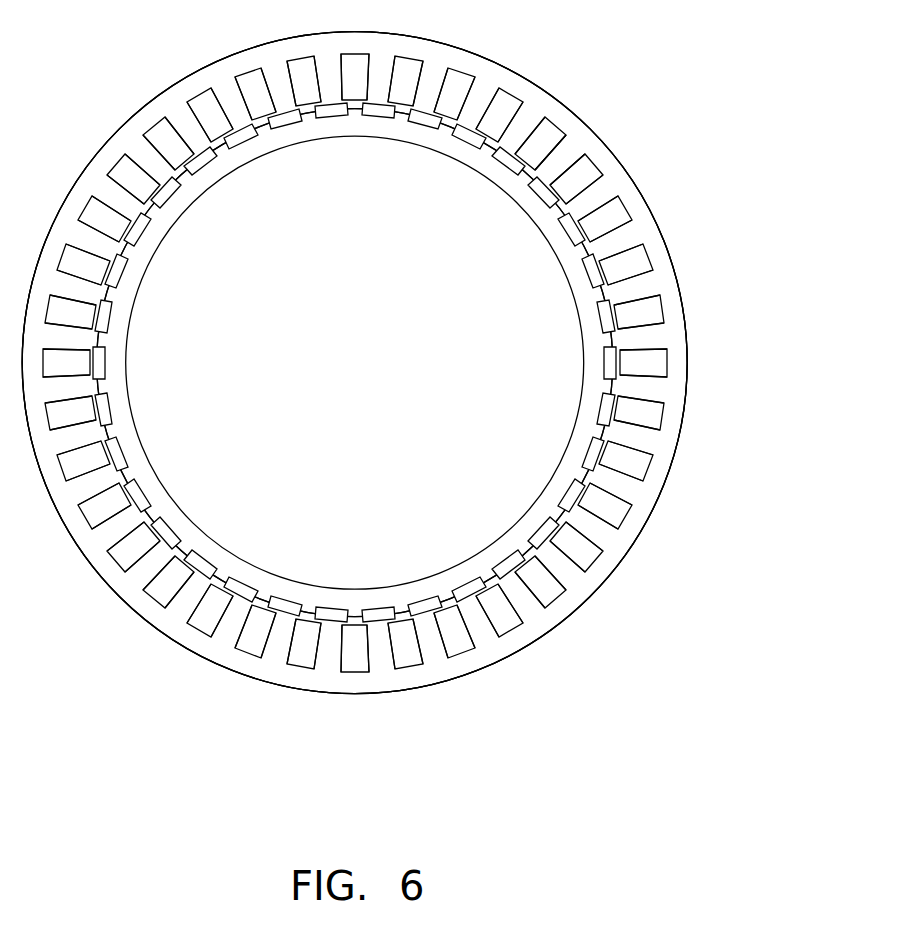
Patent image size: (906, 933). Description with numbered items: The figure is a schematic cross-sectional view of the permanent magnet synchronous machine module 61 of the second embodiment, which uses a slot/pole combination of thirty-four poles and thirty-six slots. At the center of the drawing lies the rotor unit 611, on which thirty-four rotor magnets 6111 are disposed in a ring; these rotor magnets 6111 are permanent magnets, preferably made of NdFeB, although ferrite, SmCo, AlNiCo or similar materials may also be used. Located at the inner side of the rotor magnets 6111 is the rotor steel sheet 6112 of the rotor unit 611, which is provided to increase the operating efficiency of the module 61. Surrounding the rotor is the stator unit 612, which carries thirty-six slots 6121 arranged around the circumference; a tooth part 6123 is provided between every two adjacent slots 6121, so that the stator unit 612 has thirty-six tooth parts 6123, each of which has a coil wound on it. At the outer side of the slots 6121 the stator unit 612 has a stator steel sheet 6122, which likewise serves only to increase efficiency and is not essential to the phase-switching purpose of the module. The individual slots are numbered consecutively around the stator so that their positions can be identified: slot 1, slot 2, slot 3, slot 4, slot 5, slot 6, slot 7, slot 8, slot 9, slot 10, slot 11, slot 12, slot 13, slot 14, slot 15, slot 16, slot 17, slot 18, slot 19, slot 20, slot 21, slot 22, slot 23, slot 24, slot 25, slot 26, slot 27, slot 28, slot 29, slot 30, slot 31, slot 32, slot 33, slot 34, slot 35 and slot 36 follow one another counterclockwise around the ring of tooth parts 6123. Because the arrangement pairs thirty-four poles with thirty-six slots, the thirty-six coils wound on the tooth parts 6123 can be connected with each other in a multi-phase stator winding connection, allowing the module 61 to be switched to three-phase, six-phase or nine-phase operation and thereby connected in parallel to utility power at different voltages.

The permanent magnet synchronous machine module 61 is at (105, 85).
The rotor unit 611 is at (768, 280).
The rotor magnets 6111 is at (610, 320).
The rotor steel sheet 6112 is at (595, 375).
The stator unit 612 is at (768, 73).
The slots 6121 is at (612, 214).
The stator steel sheet 6122 is at (603, 157).
The tooth part 6123 is at (573, 147).
The slot 1 is at (642, 336).
The slot 2 is at (634, 287).
The slot 3 is at (616, 240).
The slot 4 is at (592, 198).
The slot 5 is at (560, 160).
The slot 6 is at (521, 128).
The slot 7 is at (478, 103).
The slot 8 is at (430, 86).
The slot 9 is at (381, 78).
The slot 10 is at (328, 78).
The slot 11 is at (278, 86).
The slot 12 is at (231, 103).
The slot 13 is at (188, 128).
The slot 14 is at (150, 160).
The slot 15 is at (118, 198).
The slot 16 is at (92, 240).
The slot 17 is at (75, 287).
The slot 18 is at (67, 336).
The slot 19 is at (67, 389).
The slot 20 is at (75, 437).
The slot 21 is at (92, 484).
The slot 22 is at (118, 528).
The slot 23 is at (150, 565).
The slot 24 is at (188, 597).
The slot 25 is at (231, 622).
The slot 26 is at (278, 638).
The slot 27 is at (328, 647).
The slot 28 is at (381, 647).
The slot 29 is at (430, 638).
The slot 30 is at (478, 622).
The slot 31 is at (521, 597).
The slot 32 is at (560, 565).
The slot 33 is at (592, 528).
The slot 34 is at (616, 484).
The slot 35 is at (634, 437).
The slot 36 is at (642, 389).